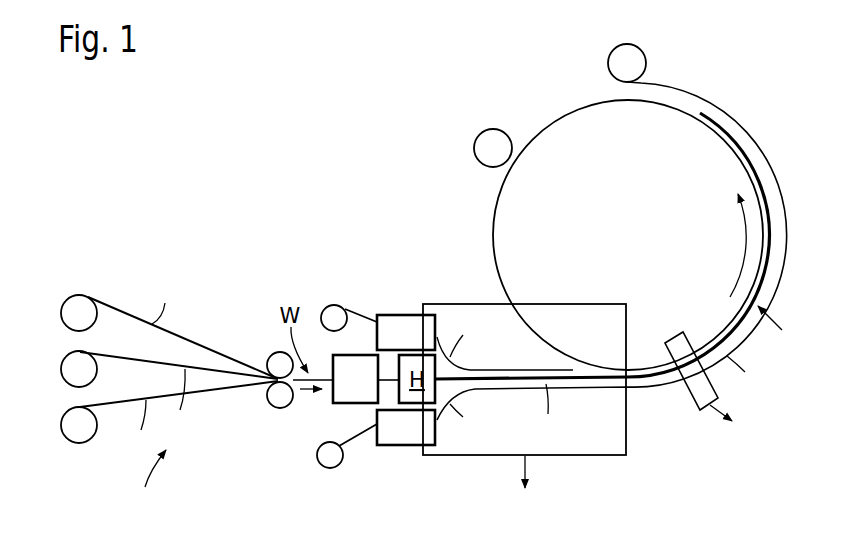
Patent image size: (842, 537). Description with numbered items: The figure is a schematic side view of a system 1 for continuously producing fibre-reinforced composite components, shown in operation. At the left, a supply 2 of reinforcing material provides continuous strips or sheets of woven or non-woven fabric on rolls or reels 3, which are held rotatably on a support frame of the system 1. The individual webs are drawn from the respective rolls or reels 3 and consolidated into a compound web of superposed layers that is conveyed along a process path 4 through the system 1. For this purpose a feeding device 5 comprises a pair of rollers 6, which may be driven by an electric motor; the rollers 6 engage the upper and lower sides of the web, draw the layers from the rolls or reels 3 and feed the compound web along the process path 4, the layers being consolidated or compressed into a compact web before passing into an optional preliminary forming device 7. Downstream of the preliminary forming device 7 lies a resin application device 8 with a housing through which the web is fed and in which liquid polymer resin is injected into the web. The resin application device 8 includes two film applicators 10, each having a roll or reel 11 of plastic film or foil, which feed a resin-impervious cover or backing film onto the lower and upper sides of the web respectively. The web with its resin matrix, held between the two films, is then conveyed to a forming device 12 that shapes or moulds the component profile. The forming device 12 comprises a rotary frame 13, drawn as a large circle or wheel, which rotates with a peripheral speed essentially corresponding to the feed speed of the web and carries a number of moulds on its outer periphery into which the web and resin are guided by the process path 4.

The system 1 is at (262, 145).
The supply of reinforcing material 2 is at (80, 288).
The rolls or reels 3 is at (61, 313).
The process path 4 is at (304, 396).
The feeding device 5 is at (275, 412).
The rollers 6 is at (278, 352).
The preliminary forming device 7 is at (366, 379).
The resin application device 8 is at (398, 296).
The film applicators 10 is at (406, 380).
The roll or reel of film 11 is at (337, 307).
The forming device 12 is at (616, 252).
The rotary frame 13 is at (549, 129).